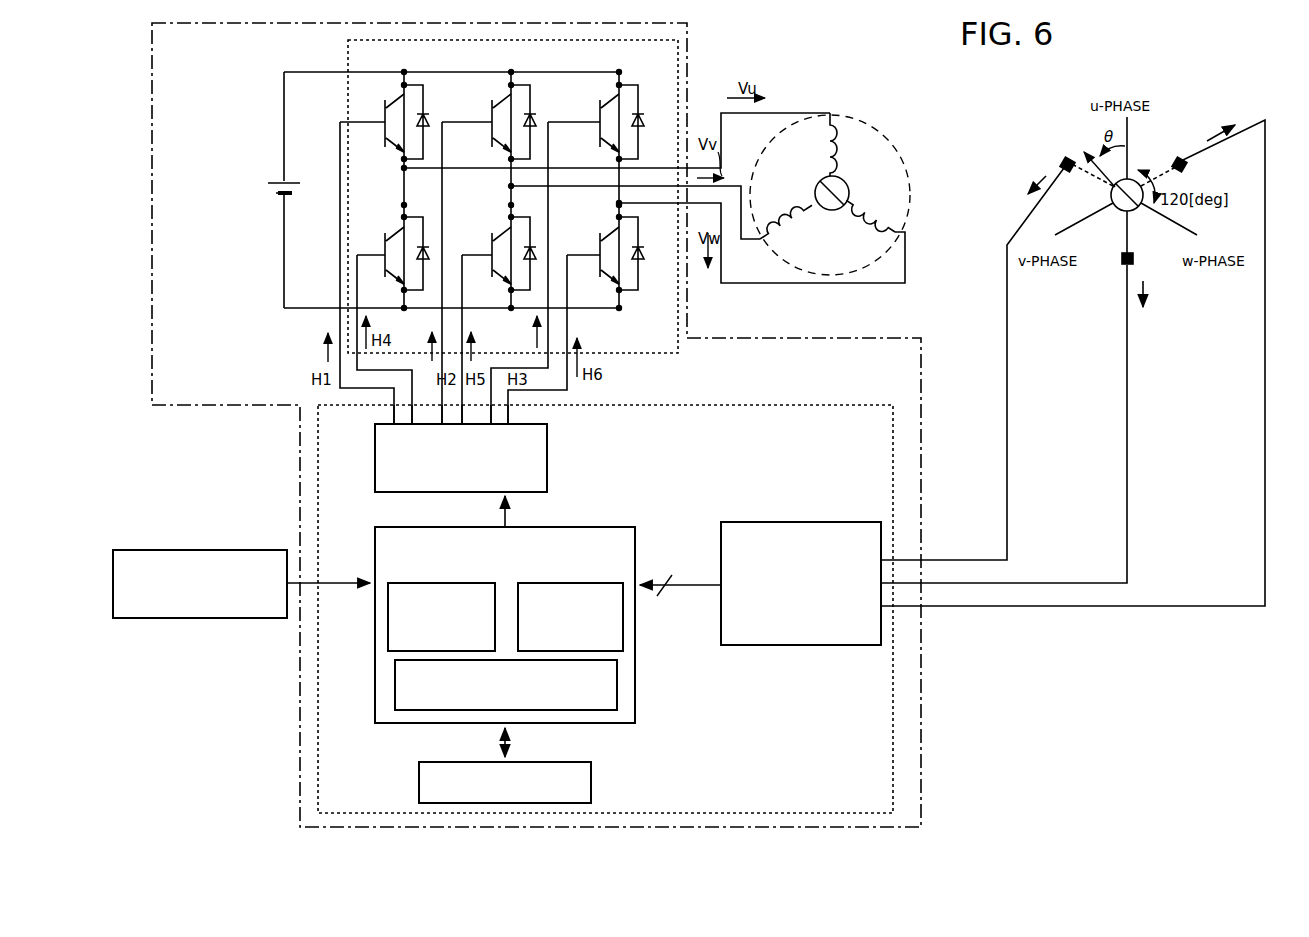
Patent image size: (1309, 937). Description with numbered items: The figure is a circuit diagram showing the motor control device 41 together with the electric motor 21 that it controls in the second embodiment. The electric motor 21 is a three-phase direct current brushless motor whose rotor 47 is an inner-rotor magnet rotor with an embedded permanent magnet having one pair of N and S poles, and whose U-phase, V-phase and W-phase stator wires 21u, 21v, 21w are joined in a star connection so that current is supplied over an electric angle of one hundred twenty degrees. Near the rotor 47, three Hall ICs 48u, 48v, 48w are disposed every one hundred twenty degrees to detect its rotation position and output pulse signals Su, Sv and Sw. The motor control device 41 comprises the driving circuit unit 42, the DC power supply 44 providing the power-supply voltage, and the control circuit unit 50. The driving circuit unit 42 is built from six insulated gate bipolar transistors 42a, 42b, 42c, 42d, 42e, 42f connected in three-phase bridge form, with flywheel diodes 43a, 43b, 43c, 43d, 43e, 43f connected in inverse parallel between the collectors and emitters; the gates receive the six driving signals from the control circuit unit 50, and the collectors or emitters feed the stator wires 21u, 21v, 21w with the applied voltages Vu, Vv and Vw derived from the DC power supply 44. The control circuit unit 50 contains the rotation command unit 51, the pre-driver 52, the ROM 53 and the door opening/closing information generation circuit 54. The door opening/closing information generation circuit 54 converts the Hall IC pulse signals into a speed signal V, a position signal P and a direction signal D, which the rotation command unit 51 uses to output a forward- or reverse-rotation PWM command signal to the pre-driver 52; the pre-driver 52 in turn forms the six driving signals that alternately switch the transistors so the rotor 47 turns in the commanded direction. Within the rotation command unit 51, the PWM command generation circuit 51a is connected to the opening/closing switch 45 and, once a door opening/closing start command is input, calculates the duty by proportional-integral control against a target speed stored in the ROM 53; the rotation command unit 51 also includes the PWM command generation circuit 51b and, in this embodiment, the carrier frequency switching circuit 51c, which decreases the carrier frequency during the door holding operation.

The electric motor 21 is at (868, 108).
The U-phase stator wire 21u is at (842, 156).
The V-phase stator wire 21v is at (759, 242).
The W-phase stator wire 21w is at (880, 246).
The motor control device 41 is at (687, 37).
The driving circuit unit 42 is at (680, 350).
The transistor 42a is at (380, 120).
The transistor 42b is at (362, 256).
The transistor 42c is at (485, 120).
The transistor 42d is at (482, 250).
The transistor 42e is at (592, 119).
The transistor 42f is at (585, 262).
The flywheel diode 43a is at (424, 114).
The flywheel diode 43b is at (420, 250).
The flywheel diode 43c is at (531, 114).
The flywheel diode 43d is at (533, 254).
The flywheel diode 43e is at (640, 113).
The flywheel diode 43f is at (641, 263).
The DC power supply 44 is at (280, 196).
The opening/closing switch 45 is at (215, 550).
The rotor 47 is at (848, 185).
The Hall IC 48u is at (1178, 158).
The Hall IC 48v is at (1068, 160).
The Hall IC 48w is at (1121, 260).
The control circuit unit 50 is at (825, 405).
The rotation command unit 51 is at (598, 527).
The PWM command generation circuit 51a is at (445, 583).
The PWM command generation circuit 51b is at (570, 583).
The carrier frequency switching circuit 51c is at (617, 684).
The pre-driver 52 is at (547, 462).
The ROM 53 is at (591, 781).
The door opening/closing information generation circuit 54 is at (768, 522).